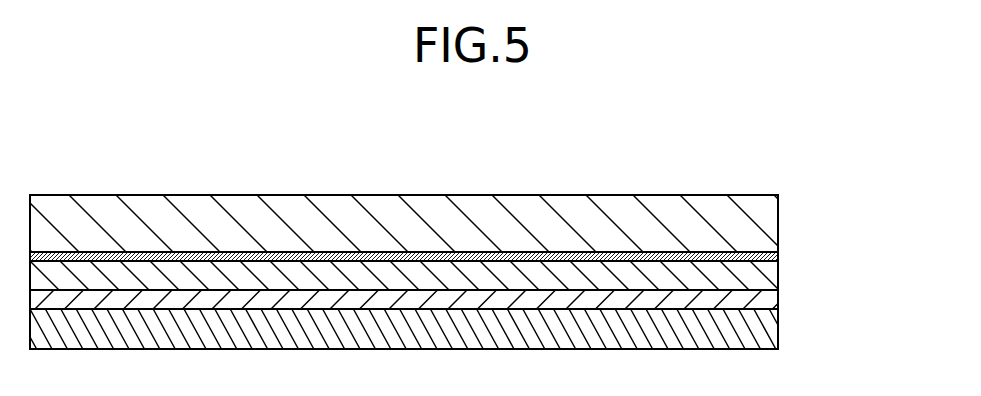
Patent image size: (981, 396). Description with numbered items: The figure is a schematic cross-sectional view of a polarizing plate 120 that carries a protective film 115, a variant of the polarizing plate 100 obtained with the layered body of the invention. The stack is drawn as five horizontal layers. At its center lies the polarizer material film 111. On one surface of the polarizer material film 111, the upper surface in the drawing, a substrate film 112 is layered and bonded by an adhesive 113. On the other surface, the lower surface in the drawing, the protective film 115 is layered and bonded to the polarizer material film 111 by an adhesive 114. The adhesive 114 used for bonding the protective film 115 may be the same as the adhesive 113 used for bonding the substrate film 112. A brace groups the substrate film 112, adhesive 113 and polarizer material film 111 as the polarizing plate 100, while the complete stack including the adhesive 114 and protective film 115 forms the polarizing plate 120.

The polarizing plate 100 is at (852, 195).
The polarizing plate 120 is at (716, 158).
The polarizer material film 111 is at (778, 279).
The substrate film 112 is at (778, 214).
The adhesive 113 is at (778, 255).
The adhesive 114 is at (778, 300).
The protective film 115 is at (778, 332).